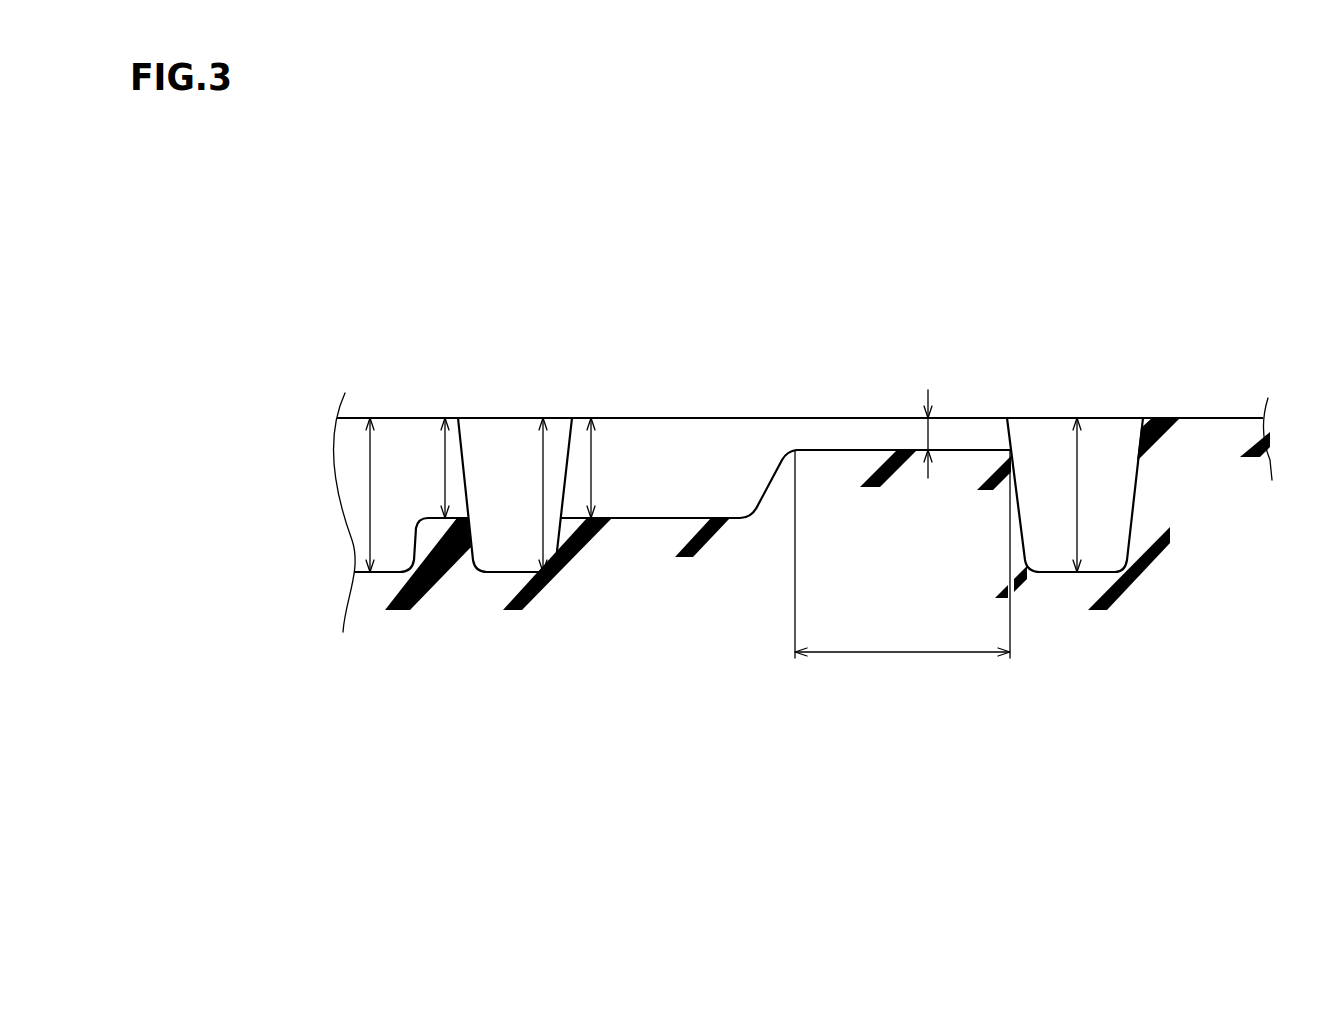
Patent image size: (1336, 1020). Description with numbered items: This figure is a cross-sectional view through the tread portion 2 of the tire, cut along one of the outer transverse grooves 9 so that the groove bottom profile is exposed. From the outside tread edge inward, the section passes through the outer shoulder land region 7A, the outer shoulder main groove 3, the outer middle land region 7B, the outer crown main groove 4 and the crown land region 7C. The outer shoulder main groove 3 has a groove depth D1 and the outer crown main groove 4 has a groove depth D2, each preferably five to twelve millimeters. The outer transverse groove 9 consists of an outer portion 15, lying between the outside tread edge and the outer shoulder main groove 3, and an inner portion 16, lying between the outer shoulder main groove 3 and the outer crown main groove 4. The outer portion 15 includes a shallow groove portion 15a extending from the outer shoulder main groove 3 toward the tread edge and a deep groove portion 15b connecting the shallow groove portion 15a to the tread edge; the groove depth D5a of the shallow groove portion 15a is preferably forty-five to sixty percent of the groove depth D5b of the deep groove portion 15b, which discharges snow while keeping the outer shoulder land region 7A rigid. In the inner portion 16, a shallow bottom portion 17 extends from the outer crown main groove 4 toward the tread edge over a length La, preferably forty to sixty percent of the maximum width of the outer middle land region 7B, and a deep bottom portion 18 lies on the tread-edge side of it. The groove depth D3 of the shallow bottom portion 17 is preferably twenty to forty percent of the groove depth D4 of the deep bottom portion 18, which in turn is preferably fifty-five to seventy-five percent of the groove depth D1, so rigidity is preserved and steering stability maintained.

The tread portion 2 is at (1186, 276).
The outer shoulder main groove 3 is at (503, 452).
The outer crown main groove 4 is at (1112, 455).
The outer shoulder land region 7A is at (358, 416).
The outer middle land region 7B is at (895, 412).
The crown land region 7C is at (1207, 417).
The outer transverse groove 9 is at (680, 398).
The outer portion 15 is at (480, 290).
The shallow groove portion 15a is at (432, 465).
The deep groove portion 15b is at (383, 468).
The inner portion 16 is at (805, 318).
The shallow bottom portion 17 is at (820, 449).
The deep bottom portion 18 is at (692, 463).
The groove depth of the outer shoulder main groove D1 is at (543, 495).
The groove depth of the outer crown main groove D2 is at (1077, 480).
The groove depth of the shallow bottom portion D3 is at (928, 433).
The groove depth of the deep bottom portion D4 is at (593, 472).
The groove depth of the shallow groove portion D5a is at (447, 487).
The groove depth of the deep groove portion D5b is at (370, 495).
The length of the shallow bottom portion La is at (902, 570).